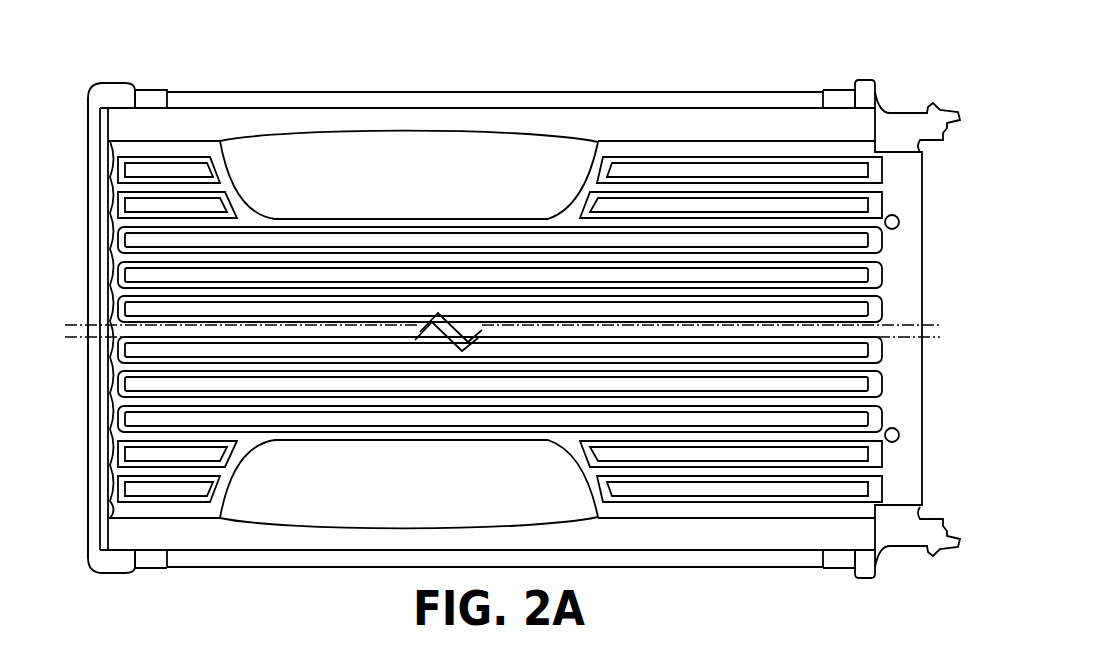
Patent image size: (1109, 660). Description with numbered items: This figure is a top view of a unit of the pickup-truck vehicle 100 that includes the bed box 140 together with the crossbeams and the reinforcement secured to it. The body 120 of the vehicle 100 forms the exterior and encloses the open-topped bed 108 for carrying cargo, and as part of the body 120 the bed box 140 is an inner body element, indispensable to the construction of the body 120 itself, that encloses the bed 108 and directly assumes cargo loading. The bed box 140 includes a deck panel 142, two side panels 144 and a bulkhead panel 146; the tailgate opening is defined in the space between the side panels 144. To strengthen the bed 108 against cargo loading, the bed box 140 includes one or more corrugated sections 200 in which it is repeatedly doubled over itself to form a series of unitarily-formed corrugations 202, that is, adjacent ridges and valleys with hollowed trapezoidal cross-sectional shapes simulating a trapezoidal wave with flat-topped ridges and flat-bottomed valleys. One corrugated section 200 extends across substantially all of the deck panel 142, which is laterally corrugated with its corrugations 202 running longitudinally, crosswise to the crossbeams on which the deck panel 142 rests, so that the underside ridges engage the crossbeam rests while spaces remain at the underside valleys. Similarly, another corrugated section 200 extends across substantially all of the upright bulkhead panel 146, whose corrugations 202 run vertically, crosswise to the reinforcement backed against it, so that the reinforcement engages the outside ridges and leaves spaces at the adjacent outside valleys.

The vehicle 100 is at (110, 80).
The bed 108 is at (197, 84).
The body 120 is at (272, 84).
The bed box 140 is at (352, 91).
The deck panel 142 is at (633, 141).
The side panels 144 is at (417, 91).
The bulkhead panel 146 is at (88, 385).
The corrugated section 200 is at (653, 157).
The corrugations 202 is at (677, 170).